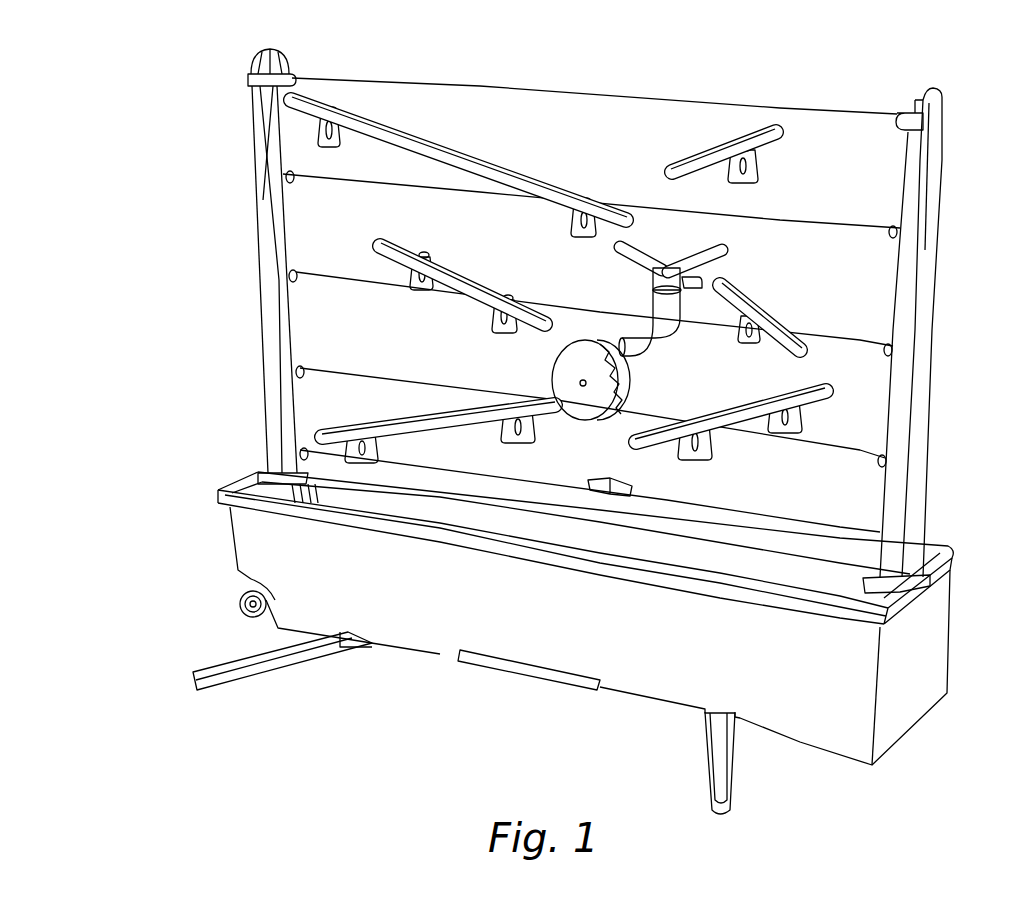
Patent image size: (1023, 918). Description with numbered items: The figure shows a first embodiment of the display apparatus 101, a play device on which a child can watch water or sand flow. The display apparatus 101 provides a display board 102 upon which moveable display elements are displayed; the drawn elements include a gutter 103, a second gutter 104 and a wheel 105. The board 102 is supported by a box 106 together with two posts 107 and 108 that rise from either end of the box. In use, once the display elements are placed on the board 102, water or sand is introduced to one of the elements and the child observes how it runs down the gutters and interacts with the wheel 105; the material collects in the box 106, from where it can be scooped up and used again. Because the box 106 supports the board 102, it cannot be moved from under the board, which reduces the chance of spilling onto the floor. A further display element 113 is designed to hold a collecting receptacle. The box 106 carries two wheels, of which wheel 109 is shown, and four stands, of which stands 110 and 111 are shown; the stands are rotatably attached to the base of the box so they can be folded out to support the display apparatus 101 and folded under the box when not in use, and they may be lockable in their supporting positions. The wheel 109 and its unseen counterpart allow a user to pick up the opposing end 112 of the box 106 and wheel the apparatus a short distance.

The display apparatus 101 is at (852, 84).
The display board 102 is at (575, 93).
The gutter 103 is at (352, 110).
The gutter 104 is at (818, 395).
The wheel 105 is at (587, 420).
The box 106 is at (537, 663).
The post 107 is at (250, 132).
The post 108 is at (942, 127).
The wheel 109 is at (243, 613).
The stand 110 is at (200, 688).
The stand 111 is at (730, 814).
The opposing end 112 is at (927, 580).
The display element 113 is at (636, 492).